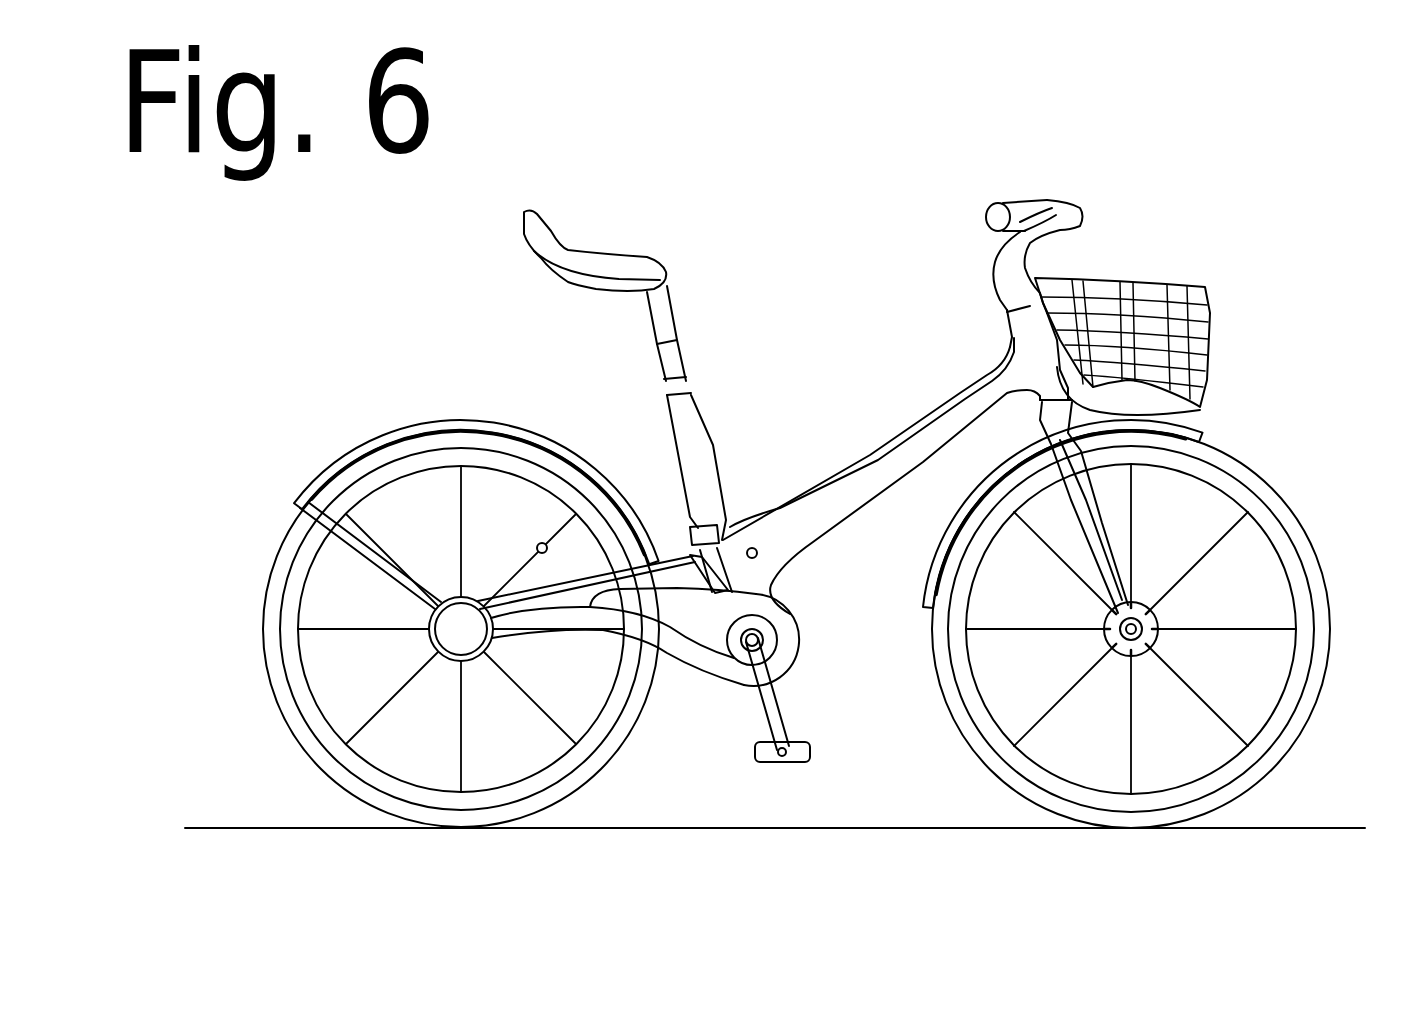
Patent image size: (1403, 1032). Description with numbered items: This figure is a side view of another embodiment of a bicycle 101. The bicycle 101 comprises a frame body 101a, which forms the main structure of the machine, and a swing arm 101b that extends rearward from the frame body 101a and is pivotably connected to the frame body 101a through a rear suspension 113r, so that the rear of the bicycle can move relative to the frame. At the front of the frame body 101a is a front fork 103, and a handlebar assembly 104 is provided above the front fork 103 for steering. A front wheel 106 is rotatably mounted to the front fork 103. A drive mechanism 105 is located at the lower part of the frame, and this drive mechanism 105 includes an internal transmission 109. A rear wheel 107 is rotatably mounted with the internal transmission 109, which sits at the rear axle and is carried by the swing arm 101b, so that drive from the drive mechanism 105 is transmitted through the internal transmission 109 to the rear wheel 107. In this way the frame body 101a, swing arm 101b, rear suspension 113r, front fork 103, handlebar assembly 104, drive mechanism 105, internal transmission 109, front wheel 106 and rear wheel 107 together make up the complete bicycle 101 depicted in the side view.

The bicycle 101 is at (892, 412).
The frame body 101a is at (838, 500).
The swing arm 101b is at (583, 590).
The front fork 103 is at (1087, 495).
The handlebar assembly 104 is at (1072, 190).
The drive mechanism 105 is at (800, 605).
The front wheel 106 is at (1298, 536).
The rear wheel 107 is at (283, 565).
The internal transmission 109 is at (448, 582).
The rear suspension 113r is at (723, 540).